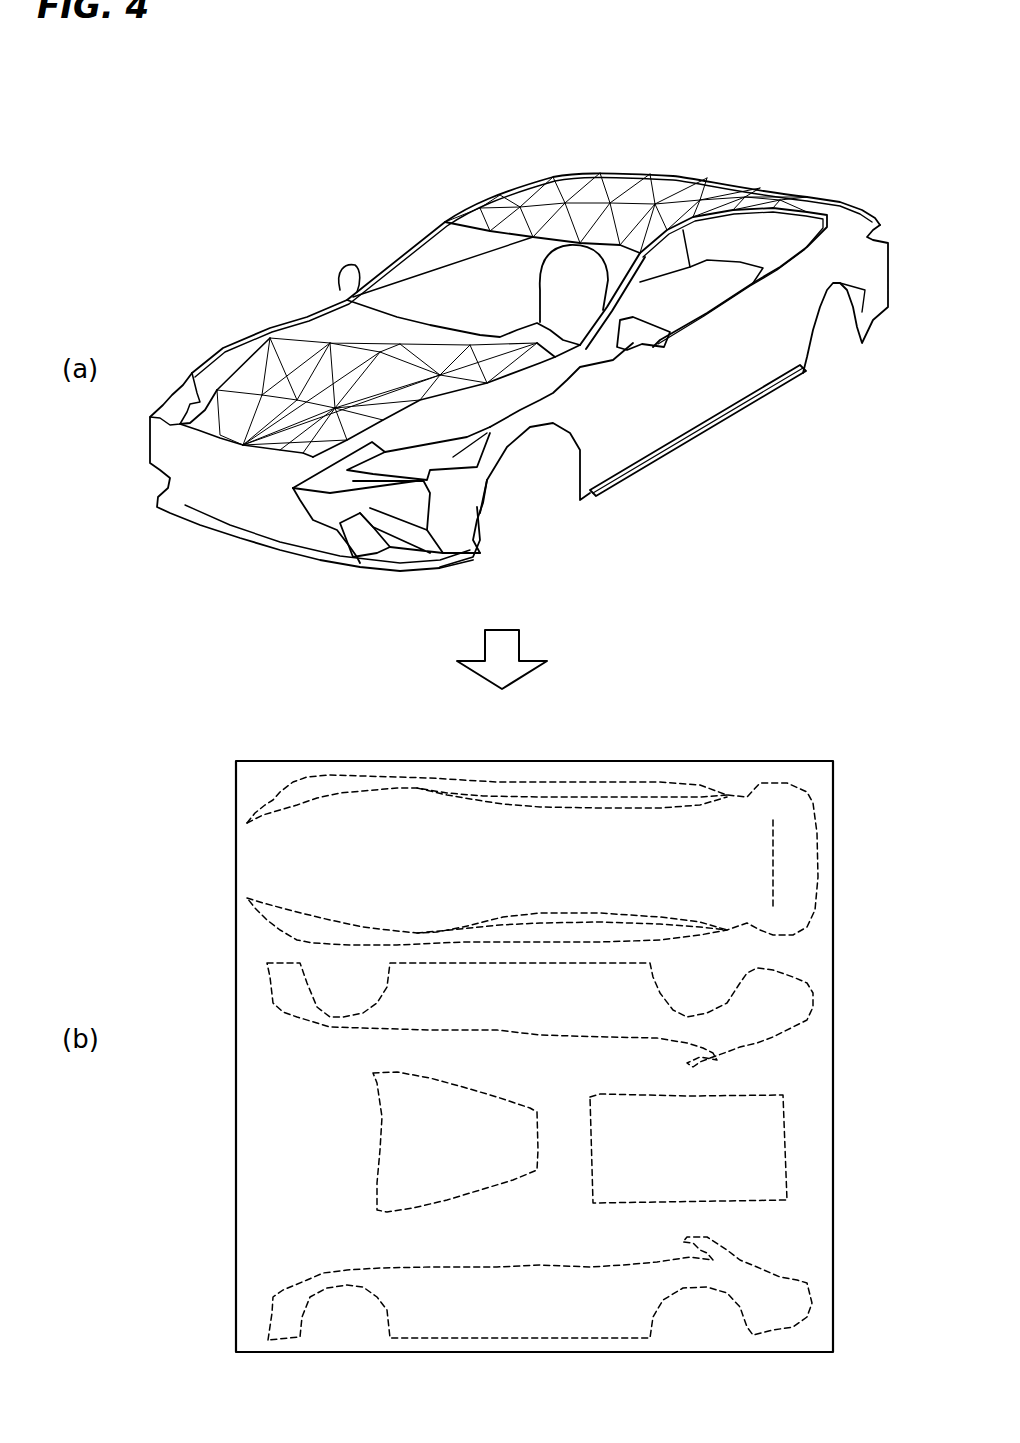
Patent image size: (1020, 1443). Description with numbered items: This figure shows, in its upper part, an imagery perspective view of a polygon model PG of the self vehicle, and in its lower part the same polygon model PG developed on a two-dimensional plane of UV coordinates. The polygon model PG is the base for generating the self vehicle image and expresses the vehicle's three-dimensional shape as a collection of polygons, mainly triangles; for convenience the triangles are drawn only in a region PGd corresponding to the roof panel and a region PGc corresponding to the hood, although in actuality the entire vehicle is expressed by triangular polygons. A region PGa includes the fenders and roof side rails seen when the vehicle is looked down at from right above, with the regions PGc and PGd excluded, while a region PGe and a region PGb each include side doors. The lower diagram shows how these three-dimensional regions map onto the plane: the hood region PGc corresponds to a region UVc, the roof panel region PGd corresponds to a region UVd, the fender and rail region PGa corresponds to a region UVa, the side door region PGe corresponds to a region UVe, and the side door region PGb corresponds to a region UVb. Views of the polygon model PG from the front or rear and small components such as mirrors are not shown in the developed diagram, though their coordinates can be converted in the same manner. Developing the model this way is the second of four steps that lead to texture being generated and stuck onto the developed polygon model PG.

The polygon model PG is at (390, 160).
The region corresponding to fenders and roof side rails PGa is at (483, 417).
The region including side doors PGb is at (455, 277).
The region corresponding to hood PGc is at (273, 440).
The region corresponding to roof panel PGd is at (718, 190).
The region including side doors PGe is at (740, 367).
The developed region corresponding to PGa UVa is at (273, 800).
The developed region corresponding to PGb UVb is at (270, 967).
The developed region corresponding to hood UVc is at (377, 1192).
The developed region corresponding to roof panel UVd is at (595, 1097).
The developed region corresponding to PGe UVe is at (270, 1295).